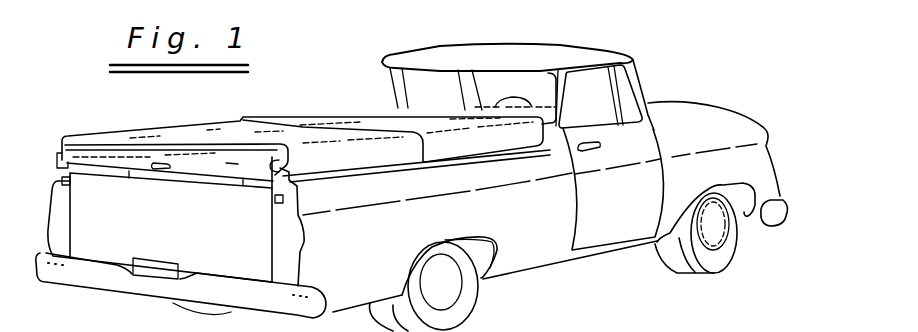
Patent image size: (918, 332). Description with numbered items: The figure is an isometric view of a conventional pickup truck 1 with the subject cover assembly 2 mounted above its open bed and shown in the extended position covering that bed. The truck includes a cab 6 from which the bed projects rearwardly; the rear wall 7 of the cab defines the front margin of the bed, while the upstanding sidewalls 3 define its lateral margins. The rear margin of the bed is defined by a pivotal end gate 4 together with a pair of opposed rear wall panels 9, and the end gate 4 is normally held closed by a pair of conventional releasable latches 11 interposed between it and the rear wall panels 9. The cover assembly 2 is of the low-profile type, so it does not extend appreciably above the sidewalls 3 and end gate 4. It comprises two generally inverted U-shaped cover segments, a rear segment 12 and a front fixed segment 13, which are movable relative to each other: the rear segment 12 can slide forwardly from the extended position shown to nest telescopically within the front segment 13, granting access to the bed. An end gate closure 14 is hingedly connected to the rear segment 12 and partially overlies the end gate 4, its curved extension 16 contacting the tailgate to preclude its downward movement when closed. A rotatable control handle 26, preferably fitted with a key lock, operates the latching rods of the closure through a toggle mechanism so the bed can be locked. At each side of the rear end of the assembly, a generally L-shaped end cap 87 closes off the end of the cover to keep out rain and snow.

The pickup truck 1 is at (721, 120).
The cover assembly 2 is at (68, 150).
The sidewalls 3 is at (405, 244).
The end gate 4 is at (192, 250).
The cab 6 is at (567, 52).
The rear wall of the cab 7 is at (562, 126).
The rear wall panels 9 is at (58, 232).
The releasable latches 11 is at (62, 185).
The rear cover segment 12 is at (178, 131).
The front fixed cover segment 13 is at (328, 119).
The end gate closure 14 is at (232, 166).
The curved extension 16 is at (131, 174).
The control handle 26 is at (160, 171).
The end cap 87 is at (57, 163).